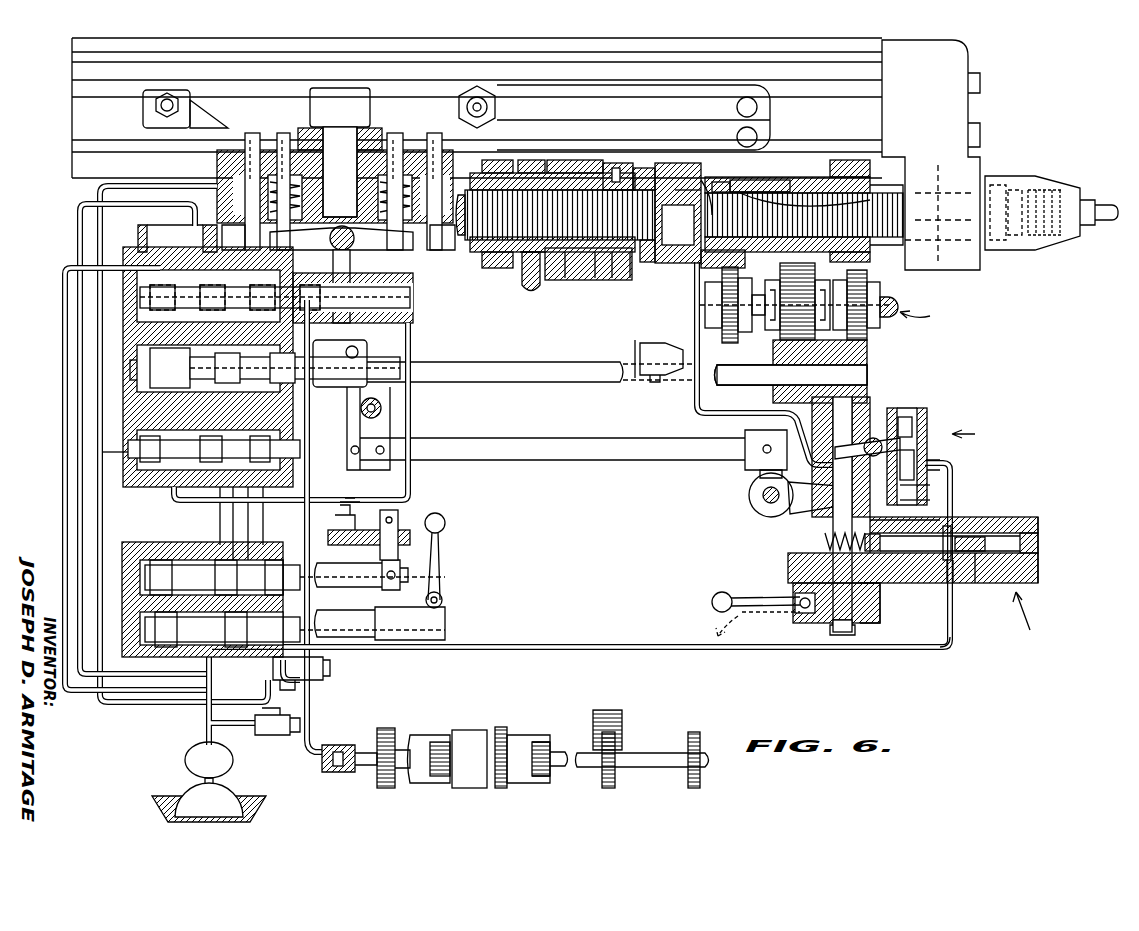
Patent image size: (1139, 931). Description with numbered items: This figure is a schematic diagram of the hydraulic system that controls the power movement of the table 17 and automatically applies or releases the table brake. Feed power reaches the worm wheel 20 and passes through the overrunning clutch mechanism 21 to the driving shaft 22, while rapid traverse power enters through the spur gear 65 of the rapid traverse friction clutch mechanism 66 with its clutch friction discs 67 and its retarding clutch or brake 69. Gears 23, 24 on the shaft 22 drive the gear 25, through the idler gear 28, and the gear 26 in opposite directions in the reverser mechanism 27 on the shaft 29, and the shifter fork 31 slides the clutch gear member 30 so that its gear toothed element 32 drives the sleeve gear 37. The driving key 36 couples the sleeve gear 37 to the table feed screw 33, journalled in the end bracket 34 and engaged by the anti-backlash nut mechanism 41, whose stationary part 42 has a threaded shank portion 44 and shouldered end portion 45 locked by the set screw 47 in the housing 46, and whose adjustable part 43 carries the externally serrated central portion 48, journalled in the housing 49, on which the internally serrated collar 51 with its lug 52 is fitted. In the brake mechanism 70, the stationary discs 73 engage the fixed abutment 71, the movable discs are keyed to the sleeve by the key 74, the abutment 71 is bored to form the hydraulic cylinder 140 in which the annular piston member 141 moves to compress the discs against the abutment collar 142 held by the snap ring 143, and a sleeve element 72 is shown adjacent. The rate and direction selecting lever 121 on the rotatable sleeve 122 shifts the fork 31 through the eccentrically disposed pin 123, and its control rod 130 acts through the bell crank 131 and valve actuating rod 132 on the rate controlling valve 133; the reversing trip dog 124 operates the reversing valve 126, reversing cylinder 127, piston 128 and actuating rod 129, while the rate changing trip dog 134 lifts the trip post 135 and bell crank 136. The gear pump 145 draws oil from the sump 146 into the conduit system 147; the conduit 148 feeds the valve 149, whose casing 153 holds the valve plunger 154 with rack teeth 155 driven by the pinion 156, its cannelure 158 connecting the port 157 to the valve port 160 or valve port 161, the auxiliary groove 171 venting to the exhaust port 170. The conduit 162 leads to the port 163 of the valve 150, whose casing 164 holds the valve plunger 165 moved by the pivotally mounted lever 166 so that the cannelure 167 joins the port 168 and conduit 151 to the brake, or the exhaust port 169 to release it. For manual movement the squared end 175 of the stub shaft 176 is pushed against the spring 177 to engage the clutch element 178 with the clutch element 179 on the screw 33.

The table 17 is at (848, 72).
The end bracket 34 is at (948, 70).
The rate changing trip dog 134 is at (145, 108).
The trip post 135 is at (342, 92).
The reversing trip dog 124 is at (488, 92).
The reversing valve 126 is at (394, 137).
The reversing cylinder 127 is at (150, 360).
The piston 128 is at (150, 368).
The rate controlling valve 133 is at (165, 470).
The bell crank 136 is at (388, 418).
The actuating rod 129 is at (575, 382).
The valve actuating rod 132 is at (636, 460).
The bell crank 131 is at (788, 505).
The conduit 151 is at (692, 418).
The conduit 148 is at (528, 645).
The conduit system 147 is at (204, 718).
The gear pump 145 is at (184, 758).
The sump 146 is at (160, 814).
The key 74 is at (679, 213).
The adjustable part 43 is at (492, 160).
The externally serrated central portion 48 is at (532, 160).
The set screw 47 is at (612, 170).
The abutment collar 142 is at (645, 172).
The stationary discs 73 is at (676, 176).
The brake mechanism 70 is at (692, 180).
The annular piston member 141 is at (717, 182).
The fixed abutment 71 is at (725, 185).
The sleeve 72 is at (735, 192).
The sleeve gear 37 is at (814, 186).
The driving key 36 is at (846, 172).
The table feed screw 33 is at (890, 185).
The clutch element 179 is at (992, 185).
The clutch element 178 is at (1014, 190).
The stub shaft 176 is at (1022, 190).
The squared end 175 is at (1104, 205).
The spring 177 is at (1040, 235).
The snap ring 143 is at (652, 252).
The hydraulic cylinder 140 is at (705, 262).
The housing 49 is at (492, 268).
The internally serrated collar 51 is at (528, 276).
The lug 52 is at (530, 285).
The anti-backlash nut mechanism 41 is at (553, 270).
The stationary part 42 is at (580, 268).
The shouldered end portion 45 is at (598, 270).
The threaded shank portion 44 is at (618, 262).
The housing 46 is at (625, 262).
The clutch gear member 30 is at (820, 296).
The gear 26 is at (868, 332).
The shaft 29 is at (890, 306).
The reverser mechanism 27 is at (927, 314).
The shifter fork 31 is at (775, 352).
The gear 25 is at (728, 338).
The gear toothed element 32 is at (792, 366).
The eccentrically disposed pin 123 is at (848, 400).
The control rod 130 is at (852, 606).
The pivotally mounted lever 166 is at (893, 432).
The valve plunger 165 is at (928, 420).
The casing 164 is at (905, 418).
The cannelure 167 is at (914, 462).
The valve 150 is at (981, 432).
The port 163 is at (932, 470).
The exhaust port 169 is at (930, 486).
The port 168 is at (925, 500).
The casing 153 is at (1020, 574).
The pinion 156 is at (826, 545).
The auxiliary groove 171 is at (950, 542).
The valve port 161 is at (1000, 530).
The conduit 162 is at (985, 548).
The valve port 160 is at (925, 519).
The exhaust port 170 is at (949, 585).
The cannelure 158 is at (978, 584).
The valve 149 is at (1034, 618).
The port 157 is at (962, 646).
The rack teeth 155 is at (860, 590).
The valve plunger 154 is at (905, 585).
The rotatable sleeve 122 is at (853, 627).
The rate and direction selecting lever 121 is at (726, 588).
The worm wheel 20 is at (382, 790).
The overrunning clutch mechanism 21 is at (422, 735).
The retarding clutch or brake 69 is at (440, 742).
The rapid traverse friction clutch mechanism 66 is at (468, 782).
The spur gear 65 is at (500, 727).
The clutch friction discs 67 is at (538, 735).
The driving shaft 22 is at (645, 768).
The gear 23 is at (604, 782).
The idler gear 28 is at (605, 710).
The gear 24 is at (694, 732).